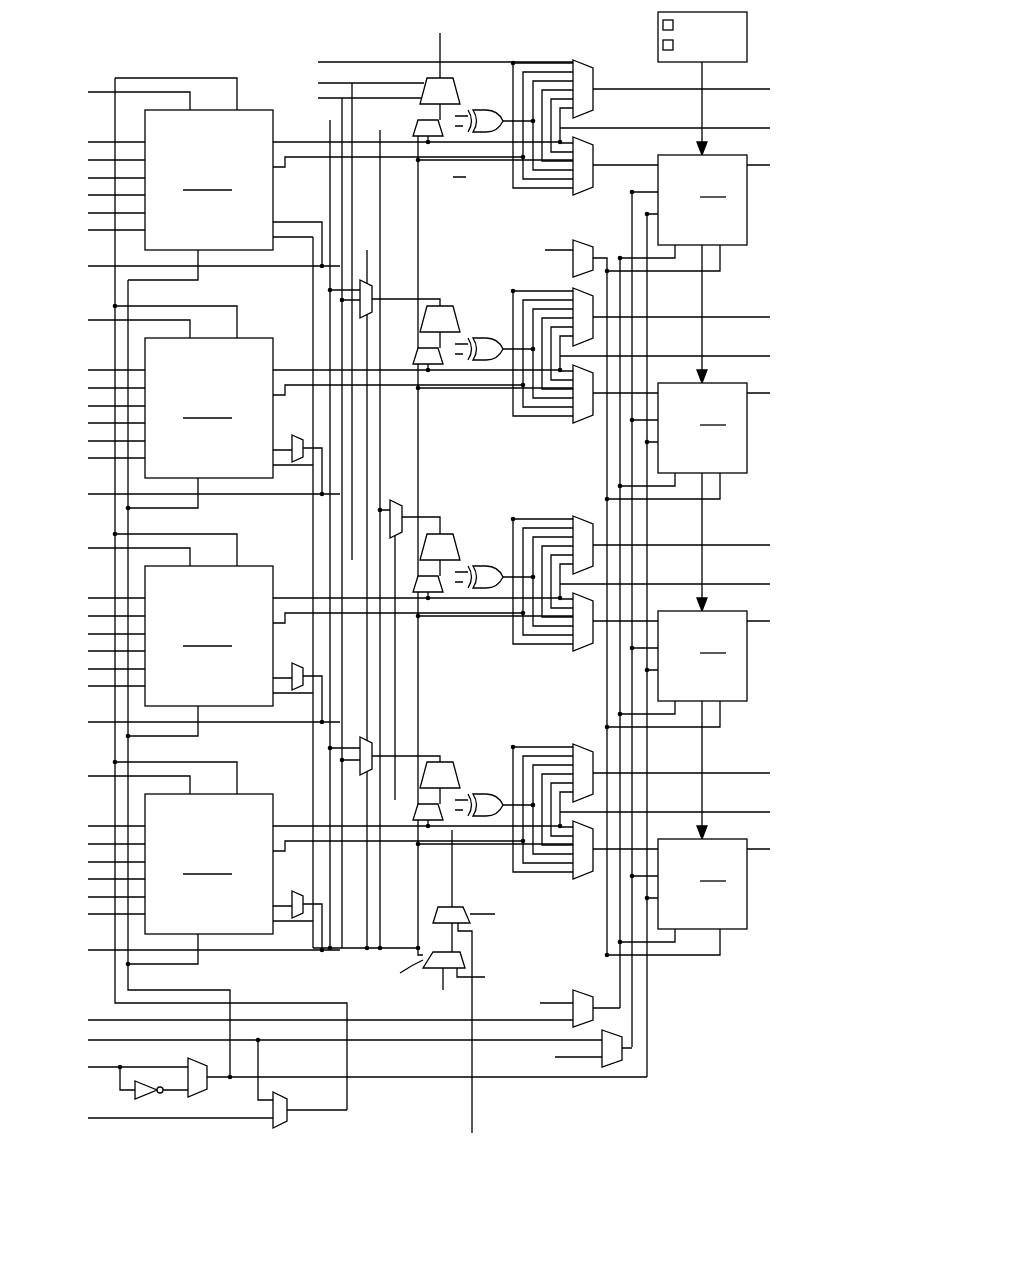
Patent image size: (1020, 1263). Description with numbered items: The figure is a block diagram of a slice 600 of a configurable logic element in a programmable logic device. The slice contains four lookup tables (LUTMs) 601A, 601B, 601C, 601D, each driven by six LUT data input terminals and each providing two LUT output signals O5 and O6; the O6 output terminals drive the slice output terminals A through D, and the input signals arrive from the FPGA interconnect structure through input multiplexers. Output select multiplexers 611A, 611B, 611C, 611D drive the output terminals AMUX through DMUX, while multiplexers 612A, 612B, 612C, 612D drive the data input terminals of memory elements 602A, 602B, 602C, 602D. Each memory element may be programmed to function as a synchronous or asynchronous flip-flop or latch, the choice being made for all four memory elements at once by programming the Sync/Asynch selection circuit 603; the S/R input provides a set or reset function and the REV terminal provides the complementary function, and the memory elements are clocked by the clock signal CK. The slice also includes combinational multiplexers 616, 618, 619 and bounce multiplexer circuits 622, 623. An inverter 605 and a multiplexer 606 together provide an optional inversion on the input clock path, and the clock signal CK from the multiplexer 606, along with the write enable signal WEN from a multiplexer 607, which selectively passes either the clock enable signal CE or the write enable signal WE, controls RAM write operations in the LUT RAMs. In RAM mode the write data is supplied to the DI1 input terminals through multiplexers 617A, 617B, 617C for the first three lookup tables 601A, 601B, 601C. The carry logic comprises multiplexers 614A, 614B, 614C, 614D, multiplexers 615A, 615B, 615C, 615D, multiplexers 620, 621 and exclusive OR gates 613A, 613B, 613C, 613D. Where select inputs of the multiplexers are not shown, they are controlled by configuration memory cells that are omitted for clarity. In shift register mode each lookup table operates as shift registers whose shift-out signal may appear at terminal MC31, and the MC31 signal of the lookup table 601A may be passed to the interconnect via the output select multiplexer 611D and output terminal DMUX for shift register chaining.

The slice 600 is at (170, 62).
The lookup table 601A is at (209, 864).
The lookup table 601B is at (209, 636).
The lookup table 601C is at (209, 408).
The lookup table 601D is at (232, 214).
The memory element 602A is at (702, 884).
The memory element 602B is at (702, 656).
The memory element 602C is at (702, 428).
The memory element 602D is at (742, 219).
The Sync/Asynch selection circuit 603 is at (658, 46).
The inverter 605 is at (138, 1100).
The multiplexer 606 is at (206, 1094).
The multiplexer 607 is at (280, 1128).
The output select multiplexer 611A is at (556, 762).
The output select multiplexer 611B is at (556, 534).
The output select multiplexer 611C is at (556, 306).
The output select multiplexer 611D is at (596, 90).
The multiplexer 612A is at (556, 861).
The multiplexer 612B is at (556, 633).
The multiplexer 612C is at (556, 405).
The multiplexer 612D is at (595, 165).
The exclusive OR gate 613A is at (486, 791).
The exclusive OR gate 613B is at (486, 563).
The exclusive OR gate 613C is at (486, 335).
The exclusive OR gate 613D is at (483, 103).
The multiplexer 614A is at (429, 761).
The multiplexer 614B is at (429, 533).
The multiplexer 614C is at (429, 305).
The multiplexer 614D is at (440, 78).
The multiplexer 615A is at (457, 837).
The multiplexer 615B is at (457, 609).
The multiplexer 615C is at (457, 381).
The multiplexer 615D is at (418, 140).
The combinational multiplexer 616 is at (366, 280).
The multiplexer 617A is at (269, 933).
The multiplexer 617B is at (269, 705).
The multiplexer 617C is at (269, 477).
The combinational multiplexer 618 is at (390, 510).
The combinational multiplexer 619 is at (372, 770).
The multiplexer 620 is at (465, 955).
The multiplexer 621 is at (578, 242).
The bounce multiplexer circuit 622 is at (577, 990).
The bounce multiplexer circuit 623 is at (610, 1068).